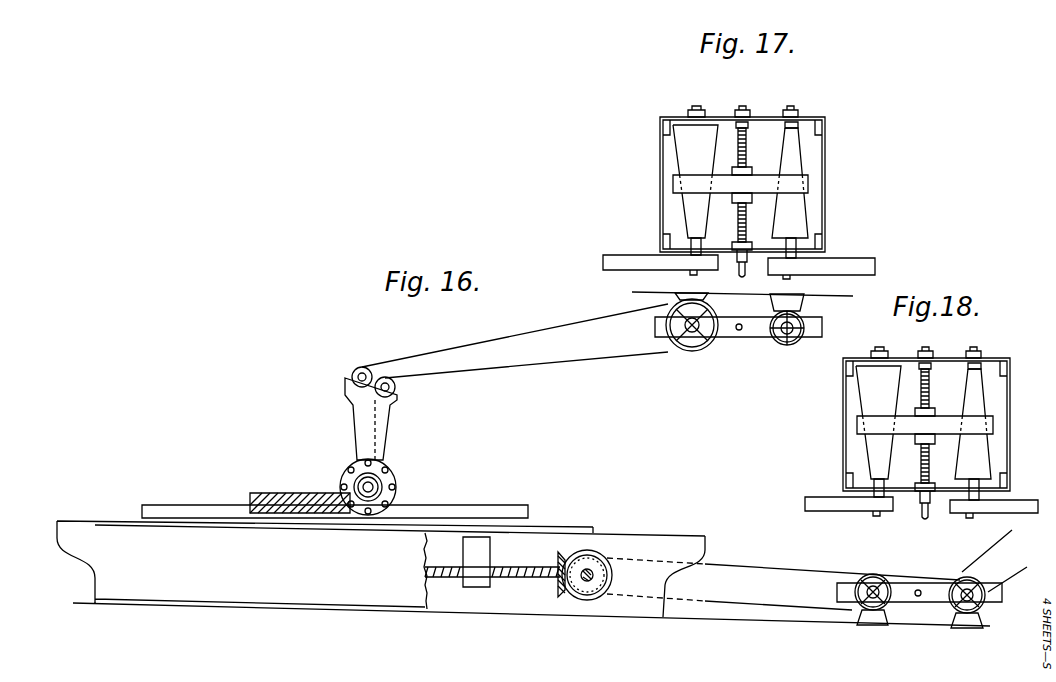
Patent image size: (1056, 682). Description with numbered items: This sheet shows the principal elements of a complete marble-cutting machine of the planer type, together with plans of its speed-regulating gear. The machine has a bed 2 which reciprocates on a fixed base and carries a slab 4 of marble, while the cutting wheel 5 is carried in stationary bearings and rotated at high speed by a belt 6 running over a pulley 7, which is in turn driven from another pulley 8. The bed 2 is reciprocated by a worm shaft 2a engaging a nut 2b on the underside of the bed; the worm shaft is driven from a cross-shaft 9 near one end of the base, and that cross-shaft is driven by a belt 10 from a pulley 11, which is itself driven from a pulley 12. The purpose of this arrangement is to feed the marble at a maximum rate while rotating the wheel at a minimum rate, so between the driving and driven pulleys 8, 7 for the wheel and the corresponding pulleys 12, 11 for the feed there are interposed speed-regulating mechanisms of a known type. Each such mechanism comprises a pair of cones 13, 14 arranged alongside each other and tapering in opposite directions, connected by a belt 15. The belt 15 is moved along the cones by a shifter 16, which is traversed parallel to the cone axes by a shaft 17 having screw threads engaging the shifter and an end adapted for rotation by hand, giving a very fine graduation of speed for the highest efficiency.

In FIG. 16, the bed 2 is at (551, 522).
In FIG. 16, the worm shaft 2a is at (519, 580).
In FIG. 16, the nut 2b is at (474, 578).
In FIG. 16, the slab 4 is at (305, 493).
In FIG. 16, the cutting wheel 5 is at (398, 480).
In FIG. 16, the belt 6 is at (500, 369).
In FIG. 16, the pulley 7 is at (666, 336).
In FIG. 16, the pulley 8 is at (778, 344).
In FIG. 16, the cross-shaft 9 is at (594, 570).
In FIG. 16, the belt 10 is at (718, 564).
In FIG. 16, the pulley 11 is at (836, 592).
In FIG. 16, the pulley 12 is at (982, 580).
In FIG. 17, the cone 13 is at (673, 181).
In FIG. 18, the cone 13 is at (855, 422).
In FIG. 17, the cone 14 is at (790, 180).
In FIG. 18, the cone 14 is at (973, 421).
In FIG. 17, the belt 15 is at (715, 185).
In FIG. 18, the belt 15 is at (898, 425).
In FIG. 17, the shifter 16 is at (719, 174).
In FIG. 18, the shifter 16 is at (901, 412).
In FIG. 17, the shaft 17 is at (754, 183).
In FIG. 18, the shaft 17 is at (907, 445).